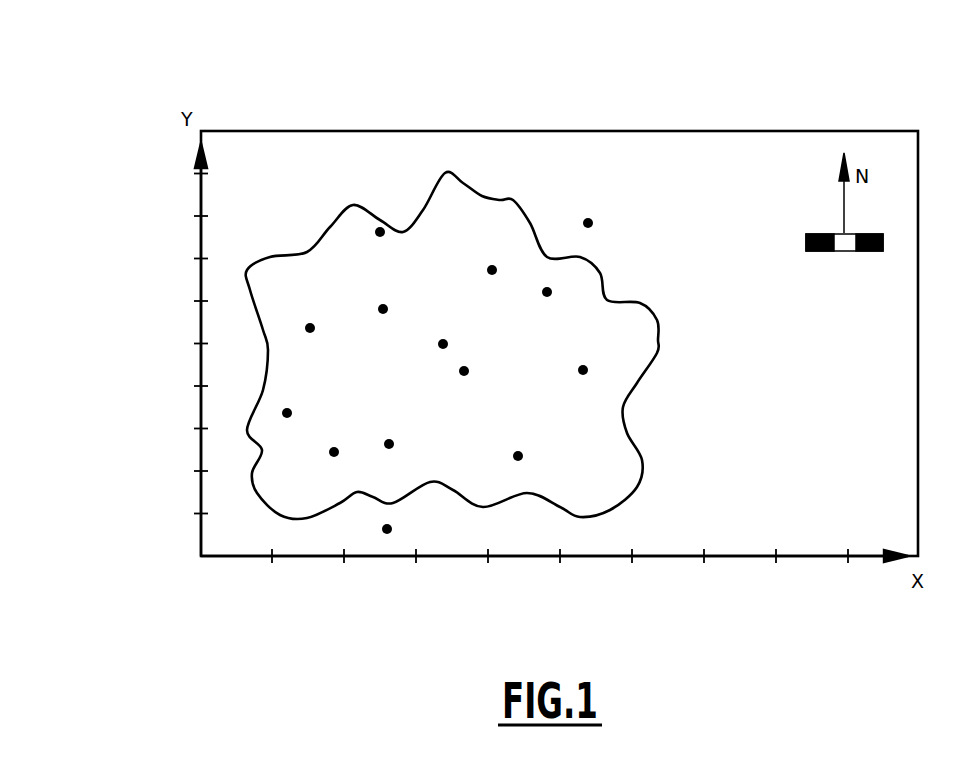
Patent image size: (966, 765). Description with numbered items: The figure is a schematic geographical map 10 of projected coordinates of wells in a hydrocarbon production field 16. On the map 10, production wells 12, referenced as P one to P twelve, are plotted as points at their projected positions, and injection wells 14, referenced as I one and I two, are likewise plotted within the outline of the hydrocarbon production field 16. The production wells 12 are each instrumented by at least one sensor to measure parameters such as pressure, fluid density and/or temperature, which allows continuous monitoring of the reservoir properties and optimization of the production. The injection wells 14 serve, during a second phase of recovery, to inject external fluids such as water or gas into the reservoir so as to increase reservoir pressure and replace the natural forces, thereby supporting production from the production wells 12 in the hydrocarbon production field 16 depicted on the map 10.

The geographical map 10 is at (703, 116).
The production wells 12 is at (518, 456).
The injection wells 14 is at (389, 444).
The hydrocarbon production field 16 is at (683, 356).